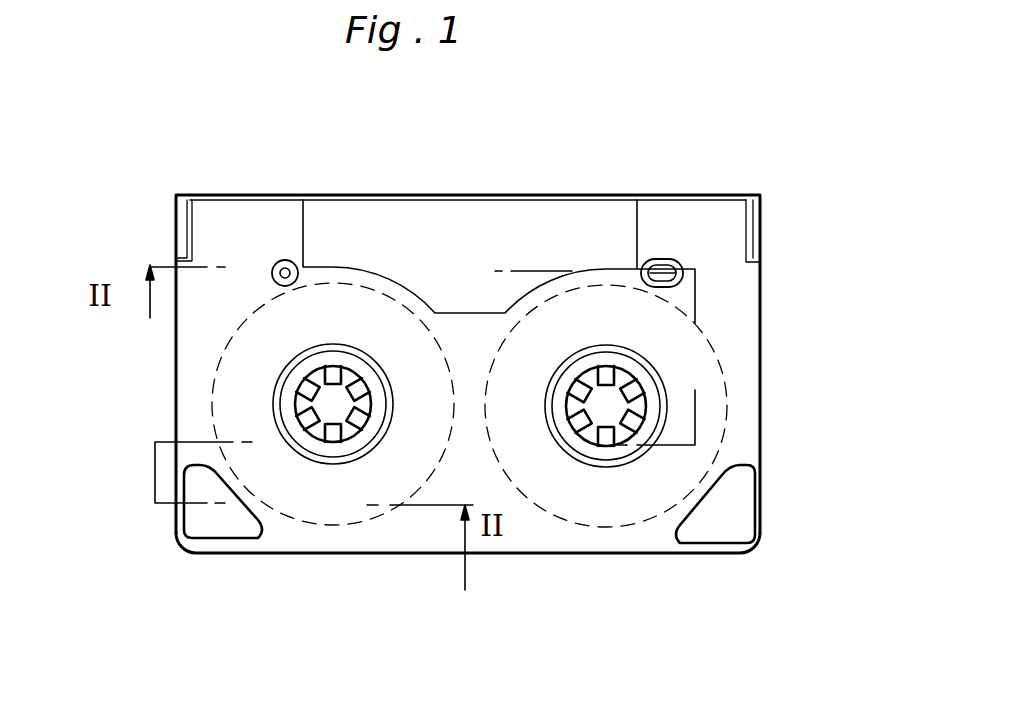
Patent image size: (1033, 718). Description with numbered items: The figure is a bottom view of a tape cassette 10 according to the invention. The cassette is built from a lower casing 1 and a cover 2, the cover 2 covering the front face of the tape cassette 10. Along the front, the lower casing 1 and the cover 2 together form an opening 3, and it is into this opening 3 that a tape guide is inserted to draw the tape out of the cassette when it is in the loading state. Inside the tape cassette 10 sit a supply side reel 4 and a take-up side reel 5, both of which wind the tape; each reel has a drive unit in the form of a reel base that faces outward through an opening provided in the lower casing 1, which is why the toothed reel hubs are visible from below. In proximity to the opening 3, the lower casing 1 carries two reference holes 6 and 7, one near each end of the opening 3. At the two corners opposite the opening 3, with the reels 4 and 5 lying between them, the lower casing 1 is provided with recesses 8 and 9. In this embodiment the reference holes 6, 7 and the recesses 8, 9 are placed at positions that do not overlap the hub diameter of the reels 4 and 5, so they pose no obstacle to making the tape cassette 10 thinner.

The lower casing 1 is at (753, 316).
The cover 2 is at (760, 213).
The opening 3 is at (511, 215).
The supply side reel 4 is at (596, 452).
The take-up side reel 5 is at (345, 447).
The reference hole 6 is at (271, 268).
The reference hole 7 is at (660, 275).
The recess 8 is at (240, 535).
The recess 9 is at (740, 505).
The tape cassette 10 is at (760, 370).